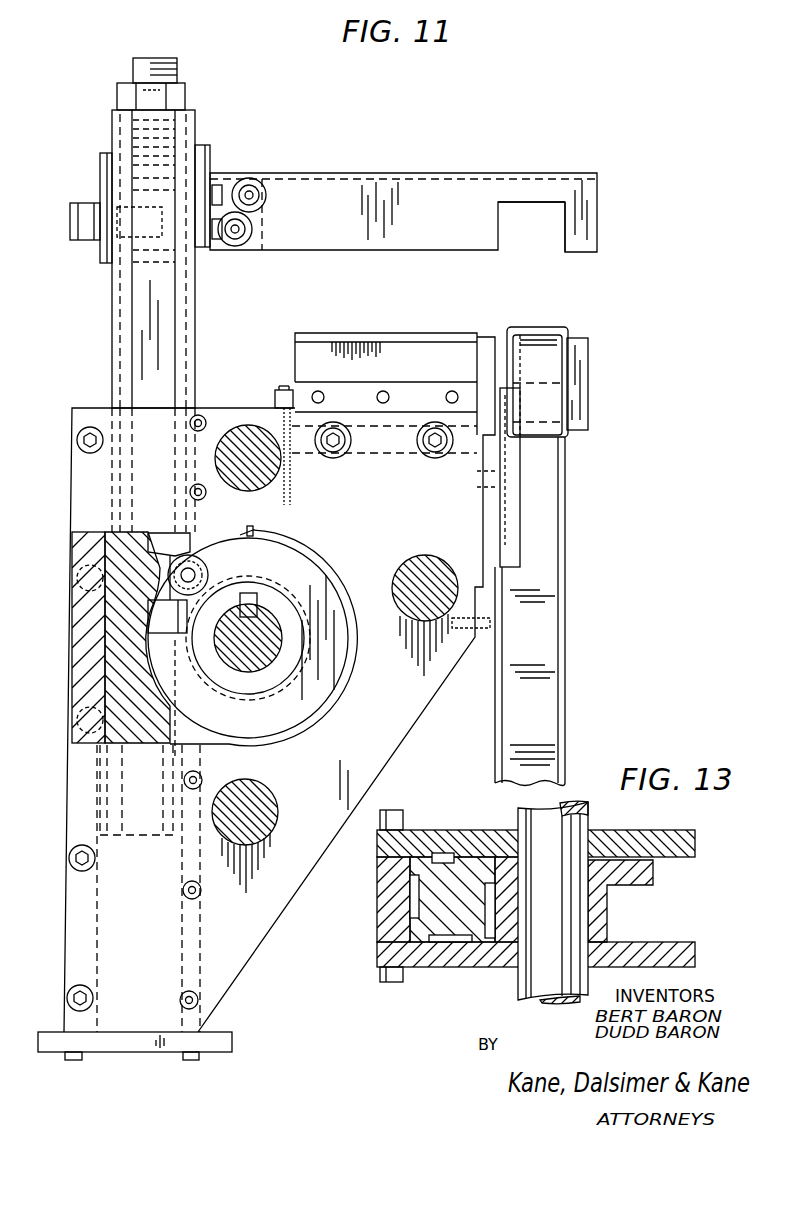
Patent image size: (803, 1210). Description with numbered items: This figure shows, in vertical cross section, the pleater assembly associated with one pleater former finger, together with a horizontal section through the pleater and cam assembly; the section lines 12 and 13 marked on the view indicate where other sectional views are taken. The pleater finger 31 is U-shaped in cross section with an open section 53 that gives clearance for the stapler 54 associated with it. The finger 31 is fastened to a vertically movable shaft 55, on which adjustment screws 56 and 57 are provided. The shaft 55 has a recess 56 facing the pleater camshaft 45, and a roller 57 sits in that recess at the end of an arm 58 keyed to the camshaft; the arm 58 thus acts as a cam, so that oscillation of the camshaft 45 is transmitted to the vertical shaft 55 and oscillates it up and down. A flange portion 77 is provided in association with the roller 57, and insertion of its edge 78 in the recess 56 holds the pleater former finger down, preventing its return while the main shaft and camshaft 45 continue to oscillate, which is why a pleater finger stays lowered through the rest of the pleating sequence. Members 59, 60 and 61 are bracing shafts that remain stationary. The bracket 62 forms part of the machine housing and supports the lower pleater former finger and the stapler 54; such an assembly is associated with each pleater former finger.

In FIG. 11, the section line 12- 12 is at (43, 263).
In FIG. 11, the section line 13- 13 is at (45, 632).
In FIG. 11, the pleater finger 31 is at (593, 208).
In FIG. 11, the pleater camshaft 45 is at (253, 660).
In FIG. 13, the pleater camshaft 45 is at (530, 820).
In FIG. 11, the open section 53 is at (563, 238).
In FIG. 11, the stapler 54 is at (550, 541).
In FIG. 11, the vertically movable shaft 55 is at (195, 137).
In FIG. 11, the recess 56 is at (70, 221).
In FIG. 11, the roller 57 is at (185, 101).
In FIG. 11, the arm 58 is at (233, 583).
In FIG. 11, the bracing shaft 59 is at (228, 838).
In FIG. 11, the bracing shaft 60 is at (255, 485).
In FIG. 11, the bracing shaft 61 is at (432, 562).
In FIG. 11, the bracket 62 is at (72, 422).
In FIG. 13, the bracket 62 is at (435, 830).
In FIG. 11, the flange portion 77 is at (316, 571).
In FIG. 13, the flange portion 77 is at (653, 877).
In FIG. 11, the edge 78 is at (247, 535).